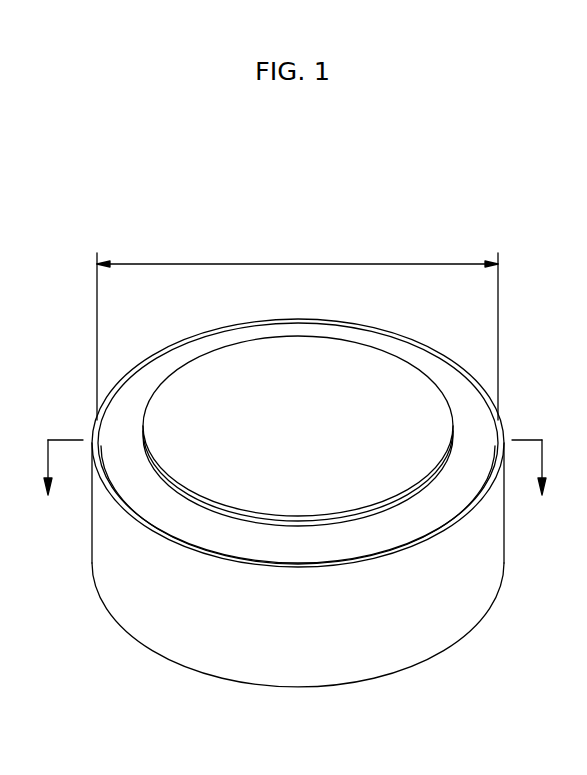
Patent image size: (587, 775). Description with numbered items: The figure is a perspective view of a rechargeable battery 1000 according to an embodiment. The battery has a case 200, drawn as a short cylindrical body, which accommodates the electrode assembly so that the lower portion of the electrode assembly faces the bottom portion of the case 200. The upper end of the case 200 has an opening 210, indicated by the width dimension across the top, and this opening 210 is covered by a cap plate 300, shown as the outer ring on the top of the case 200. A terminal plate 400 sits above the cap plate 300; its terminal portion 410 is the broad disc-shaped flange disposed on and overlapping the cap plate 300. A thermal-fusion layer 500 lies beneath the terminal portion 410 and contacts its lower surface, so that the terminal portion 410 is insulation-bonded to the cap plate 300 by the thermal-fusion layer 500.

The rechargeable battery 1000 is at (315, 182).
The opening 210 is at (297, 327).
The case 200 is at (294, 672).
The cap plate 300 is at (415, 357).
The terminal plate 400 is at (298, 400).
The terminal portion 410 is at (342, 375).
The thermal-fusion layer 500 is at (215, 512).